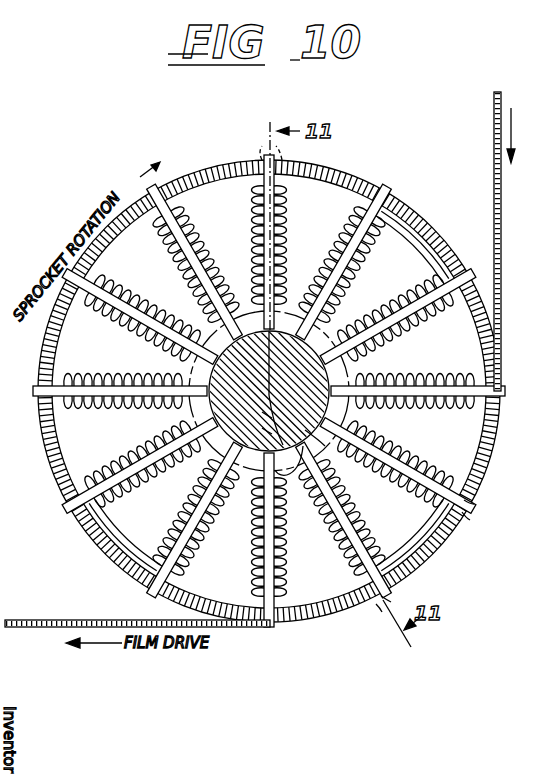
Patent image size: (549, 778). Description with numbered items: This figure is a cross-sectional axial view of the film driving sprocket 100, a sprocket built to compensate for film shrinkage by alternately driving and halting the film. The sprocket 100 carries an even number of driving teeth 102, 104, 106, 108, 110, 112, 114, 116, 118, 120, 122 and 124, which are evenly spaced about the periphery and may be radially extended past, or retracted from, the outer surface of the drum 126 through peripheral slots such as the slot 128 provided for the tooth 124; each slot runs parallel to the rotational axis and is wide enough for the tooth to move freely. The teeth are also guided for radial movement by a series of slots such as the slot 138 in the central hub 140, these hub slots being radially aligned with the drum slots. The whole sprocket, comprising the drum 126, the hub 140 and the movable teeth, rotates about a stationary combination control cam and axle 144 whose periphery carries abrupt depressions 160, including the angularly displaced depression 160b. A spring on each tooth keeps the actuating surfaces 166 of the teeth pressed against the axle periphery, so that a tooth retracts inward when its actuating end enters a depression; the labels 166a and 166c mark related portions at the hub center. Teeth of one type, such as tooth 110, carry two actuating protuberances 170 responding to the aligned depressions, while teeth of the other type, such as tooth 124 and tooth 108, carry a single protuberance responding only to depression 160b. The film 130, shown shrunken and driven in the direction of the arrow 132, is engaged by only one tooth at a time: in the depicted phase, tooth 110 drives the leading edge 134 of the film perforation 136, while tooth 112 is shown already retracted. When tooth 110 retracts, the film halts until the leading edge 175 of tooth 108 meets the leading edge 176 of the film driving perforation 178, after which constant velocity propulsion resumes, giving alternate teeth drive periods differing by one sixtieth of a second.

The driving sprocket 100 is at (322, 212).
The driving tooth 102 is at (387, 192).
The driving tooth 104 is at (472, 270).
The driving tooth 106 is at (503, 392).
The driving tooth 108 is at (473, 514).
The driving tooth 110 is at (385, 620).
The driving tooth 112 is at (268, 628).
The driving tooth 114 is at (150, 600).
The driving tooth 116 is at (68, 508).
The driving tooth 118 is at (37, 387).
The driving tooth 120 is at (92, 270).
The driving tooth 122 is at (160, 185).
The driving tooth 124 is at (260, 152).
The drum 126 is at (215, 176).
The peripheral slot 128 is at (284, 160).
The film 130 is at (501, 200).
The arrow 132 is at (514, 134).
The leading edge 134 is at (378, 604).
The film perforation 136 is at (392, 602).
The slot 138 is at (350, 368).
The central hub 140 is at (185, 358).
The combination control cam and axle 144 is at (196, 424).
The depressions 160 is at (304, 470).
The peripheral depression 160b is at (297, 420).
The actuating surface 166 is at (269, 391).
The hub portion 166a is at (254, 420).
The hub portion 166c is at (254, 436).
The actuating protuberances 170 is at (320, 444).
The leading edge 175 is at (468, 522).
The leading edge 176 is at (462, 528).
The film driving perforation 178 is at (472, 506).